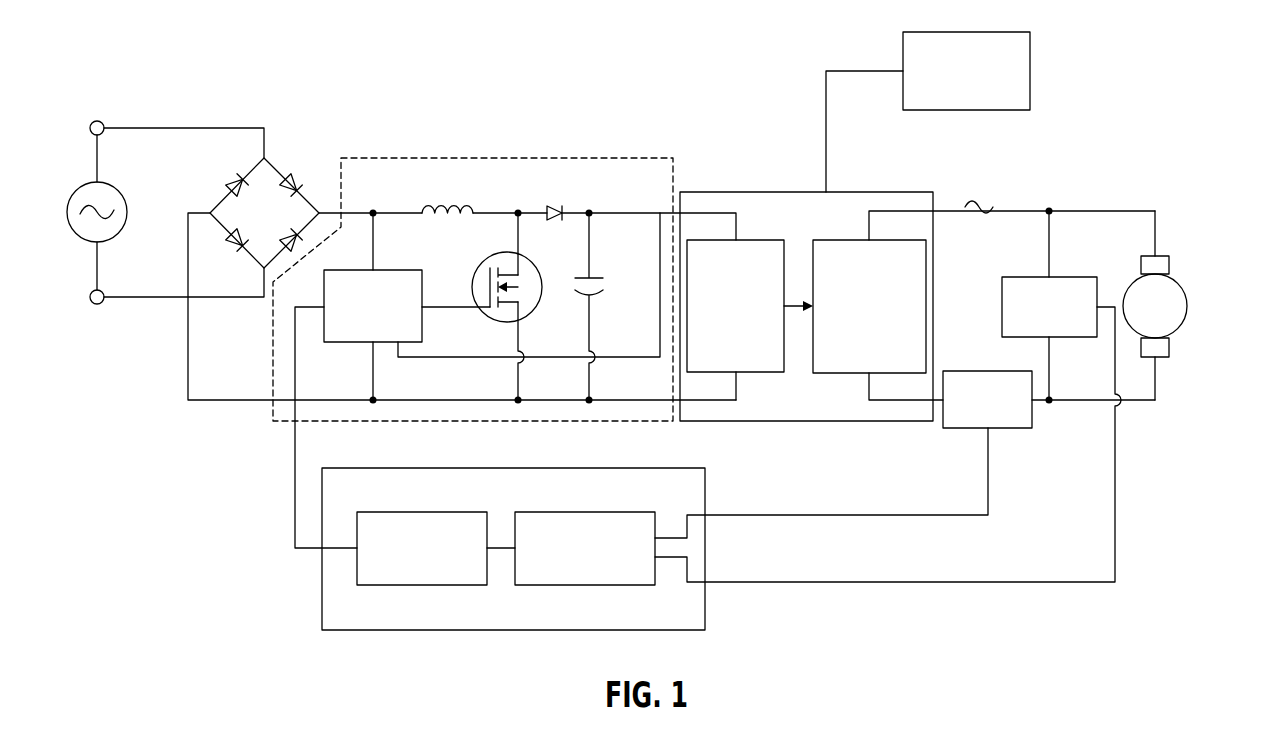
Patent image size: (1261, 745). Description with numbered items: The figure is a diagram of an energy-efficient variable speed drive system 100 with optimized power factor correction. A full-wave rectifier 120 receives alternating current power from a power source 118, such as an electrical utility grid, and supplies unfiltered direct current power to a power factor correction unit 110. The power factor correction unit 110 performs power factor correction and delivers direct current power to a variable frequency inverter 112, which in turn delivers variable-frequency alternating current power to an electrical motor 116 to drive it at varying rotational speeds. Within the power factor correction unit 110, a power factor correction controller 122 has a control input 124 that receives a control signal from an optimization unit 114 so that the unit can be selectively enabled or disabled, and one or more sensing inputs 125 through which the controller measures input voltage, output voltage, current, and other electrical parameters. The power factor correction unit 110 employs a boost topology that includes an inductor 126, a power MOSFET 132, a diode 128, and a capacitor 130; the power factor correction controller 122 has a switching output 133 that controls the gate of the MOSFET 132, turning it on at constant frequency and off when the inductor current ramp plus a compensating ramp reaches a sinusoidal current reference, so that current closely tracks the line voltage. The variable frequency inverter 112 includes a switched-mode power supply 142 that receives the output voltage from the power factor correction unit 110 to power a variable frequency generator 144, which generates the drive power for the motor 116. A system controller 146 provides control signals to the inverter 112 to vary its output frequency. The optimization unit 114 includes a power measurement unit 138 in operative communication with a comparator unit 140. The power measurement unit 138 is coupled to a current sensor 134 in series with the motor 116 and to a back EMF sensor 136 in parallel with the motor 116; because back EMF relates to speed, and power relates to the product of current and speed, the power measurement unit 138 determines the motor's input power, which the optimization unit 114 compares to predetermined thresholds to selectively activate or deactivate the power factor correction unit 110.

The variable speed drive system 100 is at (1092, 50).
The power factor correction unit 110 is at (613, 157).
The variable frequency inverter 112 is at (735, 192).
The optimization unit 114 is at (633, 468).
The electrical motor 116 is at (1182, 283).
The power source 118 is at (90, 183).
The full-wave rectifier 120 is at (288, 151).
The power factor correction controller 122 is at (373, 306).
The control input 124 is at (321, 309).
The sensing inputs 125 is at (373, 236).
The inductor 126 is at (470, 200).
The diode 128 is at (550, 209).
The capacitor 130 is at (600, 278).
The power MOSFET 132 is at (538, 293).
The switching output 133 is at (426, 303).
The current sensor 134 is at (1005, 428).
The back EMF sensor 136 is at (1037, 277).
The power measurement unit 138 is at (620, 512).
The comparator unit 140 is at (390, 512).
The switched-mode power supply 142 is at (735, 306).
The variable frequency generator 144 is at (869, 306).
The system controller 146 is at (987, 32).